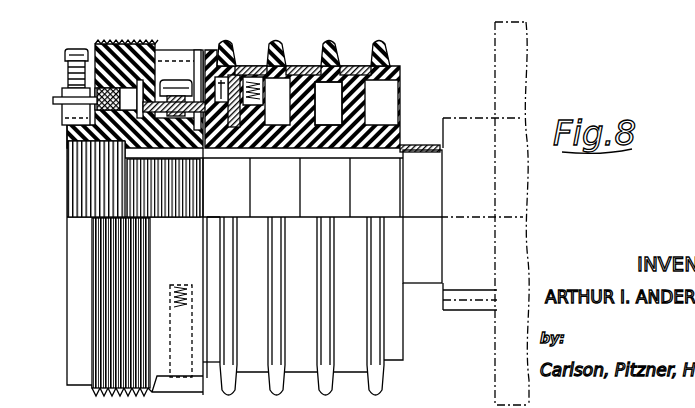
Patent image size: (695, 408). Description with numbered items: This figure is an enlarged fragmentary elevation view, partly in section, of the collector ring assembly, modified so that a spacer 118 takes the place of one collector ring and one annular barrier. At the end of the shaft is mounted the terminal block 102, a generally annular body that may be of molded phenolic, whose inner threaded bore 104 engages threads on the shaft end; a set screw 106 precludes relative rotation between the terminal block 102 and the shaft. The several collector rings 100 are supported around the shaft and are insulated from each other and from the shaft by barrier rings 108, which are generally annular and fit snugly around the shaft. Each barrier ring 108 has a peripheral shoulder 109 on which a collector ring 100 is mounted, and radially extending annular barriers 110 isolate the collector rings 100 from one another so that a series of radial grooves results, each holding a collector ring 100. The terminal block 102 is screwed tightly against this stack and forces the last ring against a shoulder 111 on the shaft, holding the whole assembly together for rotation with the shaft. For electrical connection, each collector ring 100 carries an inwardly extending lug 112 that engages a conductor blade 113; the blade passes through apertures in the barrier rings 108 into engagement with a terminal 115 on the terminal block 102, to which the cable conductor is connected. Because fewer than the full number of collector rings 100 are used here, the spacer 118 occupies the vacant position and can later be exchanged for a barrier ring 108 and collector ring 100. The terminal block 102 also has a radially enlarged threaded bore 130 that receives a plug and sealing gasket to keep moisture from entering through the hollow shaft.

The collector ring 100 is at (249, 66).
The terminal block 102 is at (152, 44).
The inner threaded bore 104 is at (180, 172).
The set screw 106 is at (172, 282).
The barrier ring 108 is at (337, 46).
The peripheral shoulder 109 is at (343, 82).
The annular barrier 110 is at (225, 40).
The shoulder 111 is at (440, 148).
The inwardly extending lug 112 is at (240, 158).
The conductor blade 113 is at (212, 158).
The terminal 115 is at (90, 58).
The spacer 118 is at (415, 144).
The radially enlarged bore 130 is at (86, 144).